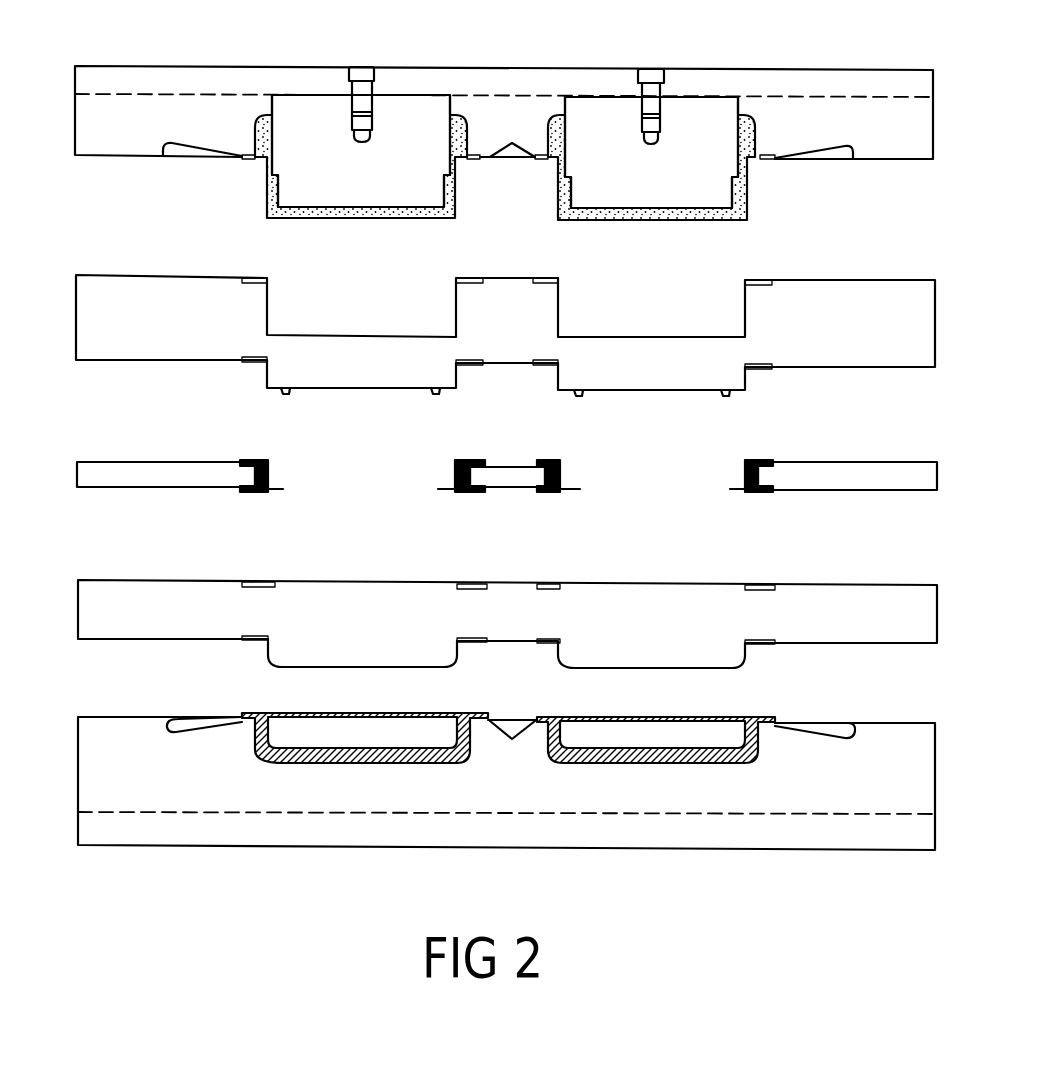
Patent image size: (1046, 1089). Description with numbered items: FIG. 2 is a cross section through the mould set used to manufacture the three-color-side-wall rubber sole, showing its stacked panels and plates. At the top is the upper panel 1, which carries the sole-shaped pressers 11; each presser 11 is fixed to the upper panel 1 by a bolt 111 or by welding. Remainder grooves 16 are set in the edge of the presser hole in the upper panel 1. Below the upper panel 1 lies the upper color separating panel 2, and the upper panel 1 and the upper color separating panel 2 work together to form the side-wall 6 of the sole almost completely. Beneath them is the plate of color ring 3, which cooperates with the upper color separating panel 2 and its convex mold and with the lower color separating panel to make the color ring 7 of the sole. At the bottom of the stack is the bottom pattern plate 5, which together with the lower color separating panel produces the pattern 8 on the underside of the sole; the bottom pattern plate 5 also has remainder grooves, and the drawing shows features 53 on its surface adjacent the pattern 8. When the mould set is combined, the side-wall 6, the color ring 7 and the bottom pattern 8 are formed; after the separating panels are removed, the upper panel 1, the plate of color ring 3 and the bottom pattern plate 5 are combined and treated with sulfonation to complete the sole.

The upper panel 1 is at (888, 93).
The sole-shaped presser 11 is at (715, 115).
The bolt 111 is at (362, 67).
The remainder groove 16 is at (175, 152).
The side-wall 6 is at (262, 185).
The upper color separating panel 2 is at (855, 283).
The plate of color ring 3 is at (840, 472).
The color ring 7 is at (270, 462).
The bottom pattern plate 5 is at (882, 757).
The projection 53 is at (188, 722).
The pattern 8 is at (283, 743).